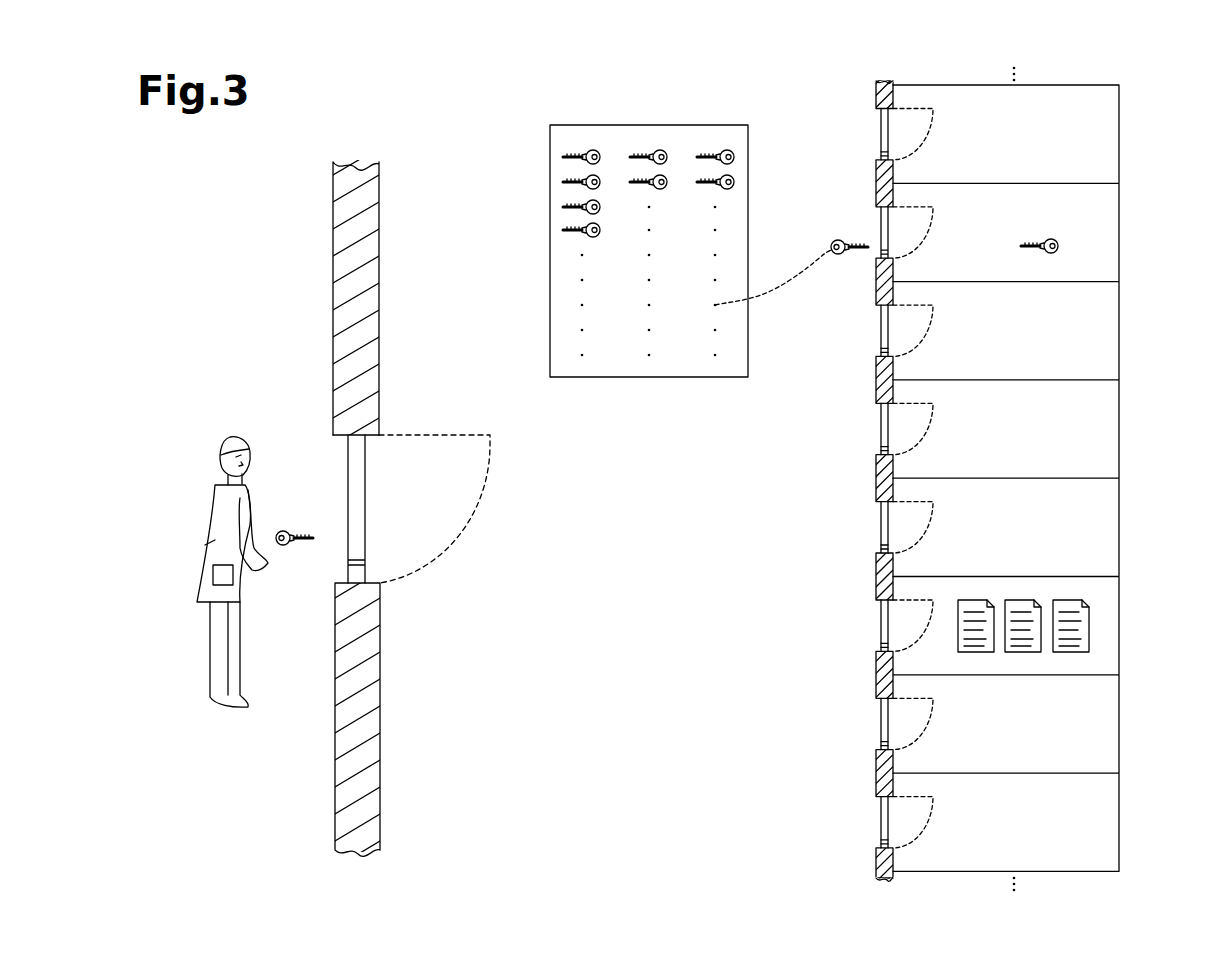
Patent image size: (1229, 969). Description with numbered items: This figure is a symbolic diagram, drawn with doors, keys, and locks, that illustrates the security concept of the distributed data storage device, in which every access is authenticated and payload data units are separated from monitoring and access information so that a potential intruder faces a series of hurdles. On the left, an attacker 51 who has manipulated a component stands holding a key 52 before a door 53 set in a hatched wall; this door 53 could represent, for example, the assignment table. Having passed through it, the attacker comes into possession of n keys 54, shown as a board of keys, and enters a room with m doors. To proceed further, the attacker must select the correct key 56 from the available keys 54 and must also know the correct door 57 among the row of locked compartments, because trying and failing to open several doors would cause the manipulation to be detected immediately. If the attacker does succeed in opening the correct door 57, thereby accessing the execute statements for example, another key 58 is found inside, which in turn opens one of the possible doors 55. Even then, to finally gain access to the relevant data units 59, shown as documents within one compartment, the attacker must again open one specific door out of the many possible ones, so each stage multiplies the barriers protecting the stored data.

The attacker 51 is at (218, 722).
The key 52 is at (295, 556).
The door 53 is at (313, 492).
The keys 54 is at (532, 160).
The doors 55 is at (989, 480).
The correct key 56 is at (840, 268).
The correct door 57 is at (876, 235).
The key 58 is at (1068, 231).
The data units 59 is at (1097, 611).